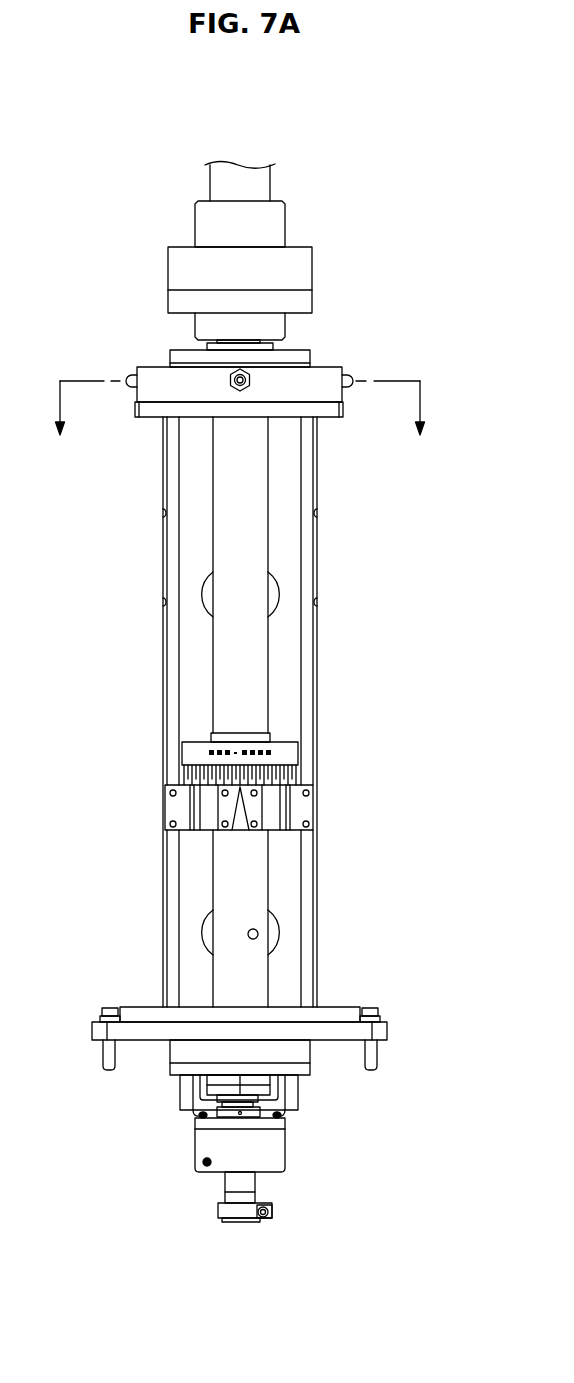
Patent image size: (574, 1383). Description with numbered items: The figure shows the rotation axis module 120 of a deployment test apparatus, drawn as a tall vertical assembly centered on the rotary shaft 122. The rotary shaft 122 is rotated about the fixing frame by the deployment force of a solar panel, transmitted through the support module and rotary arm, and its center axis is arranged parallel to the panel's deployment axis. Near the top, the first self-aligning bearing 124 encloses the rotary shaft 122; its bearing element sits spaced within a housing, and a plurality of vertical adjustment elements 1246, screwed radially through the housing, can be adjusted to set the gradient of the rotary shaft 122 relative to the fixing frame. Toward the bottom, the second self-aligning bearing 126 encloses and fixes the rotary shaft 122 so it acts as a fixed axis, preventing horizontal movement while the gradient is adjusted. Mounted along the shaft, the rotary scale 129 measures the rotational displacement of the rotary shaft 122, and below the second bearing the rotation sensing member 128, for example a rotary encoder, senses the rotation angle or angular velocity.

The rotation axis module 120 is at (152, 107).
The rotary shaft 122 is at (260, 183).
The first self-aligning bearing 124 is at (152, 390).
The vertical adjustment elements 1246 is at (130, 380).
The second self-aligning bearing 126 is at (297, 1053).
The rotation sensing member 128 is at (205, 1143).
The rotary scale 129 is at (288, 753).